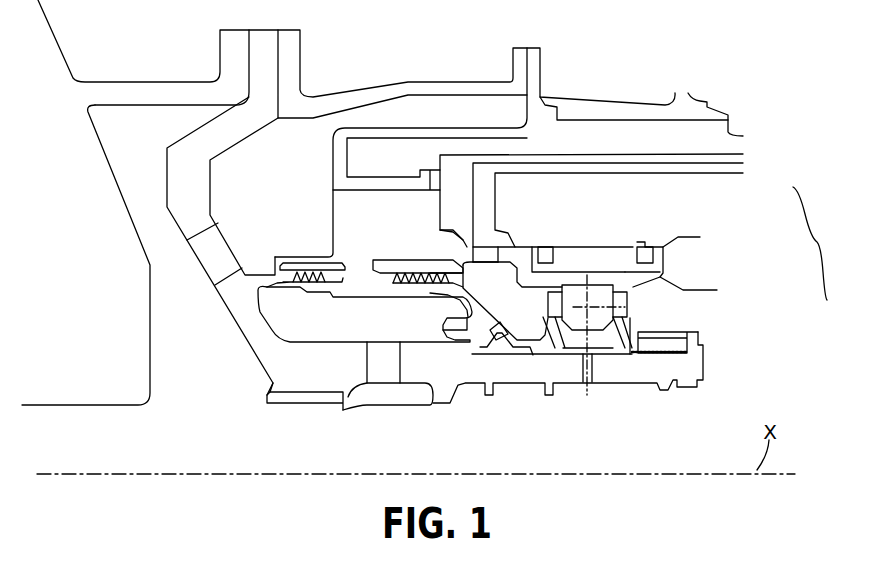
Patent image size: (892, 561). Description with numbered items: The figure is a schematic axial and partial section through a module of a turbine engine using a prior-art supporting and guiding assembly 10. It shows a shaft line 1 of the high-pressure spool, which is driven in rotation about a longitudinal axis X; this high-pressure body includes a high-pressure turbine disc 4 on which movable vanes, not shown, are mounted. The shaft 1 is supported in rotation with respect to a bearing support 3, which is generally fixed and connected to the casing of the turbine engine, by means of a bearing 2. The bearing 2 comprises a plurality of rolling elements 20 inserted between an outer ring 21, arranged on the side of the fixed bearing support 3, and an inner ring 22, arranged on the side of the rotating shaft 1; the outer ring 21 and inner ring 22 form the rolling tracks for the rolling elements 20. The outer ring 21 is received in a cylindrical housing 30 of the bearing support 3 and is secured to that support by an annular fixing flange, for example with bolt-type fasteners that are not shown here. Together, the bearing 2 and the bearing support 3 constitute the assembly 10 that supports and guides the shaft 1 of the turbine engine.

The shaft line 1 is at (200, 205).
The high-pressure turbine disc 4 is at (128, 328).
The assembly for supporting and guiding the shaft 10 is at (823, 243).
The bearing 2 is at (633, 290).
The bearing support 3 is at (740, 222).
The rolling elements 20 is at (593, 305).
The outer ring 21 is at (582, 257).
The inner ring 22 is at (600, 335).
The cylindrical housing 30 is at (638, 243).